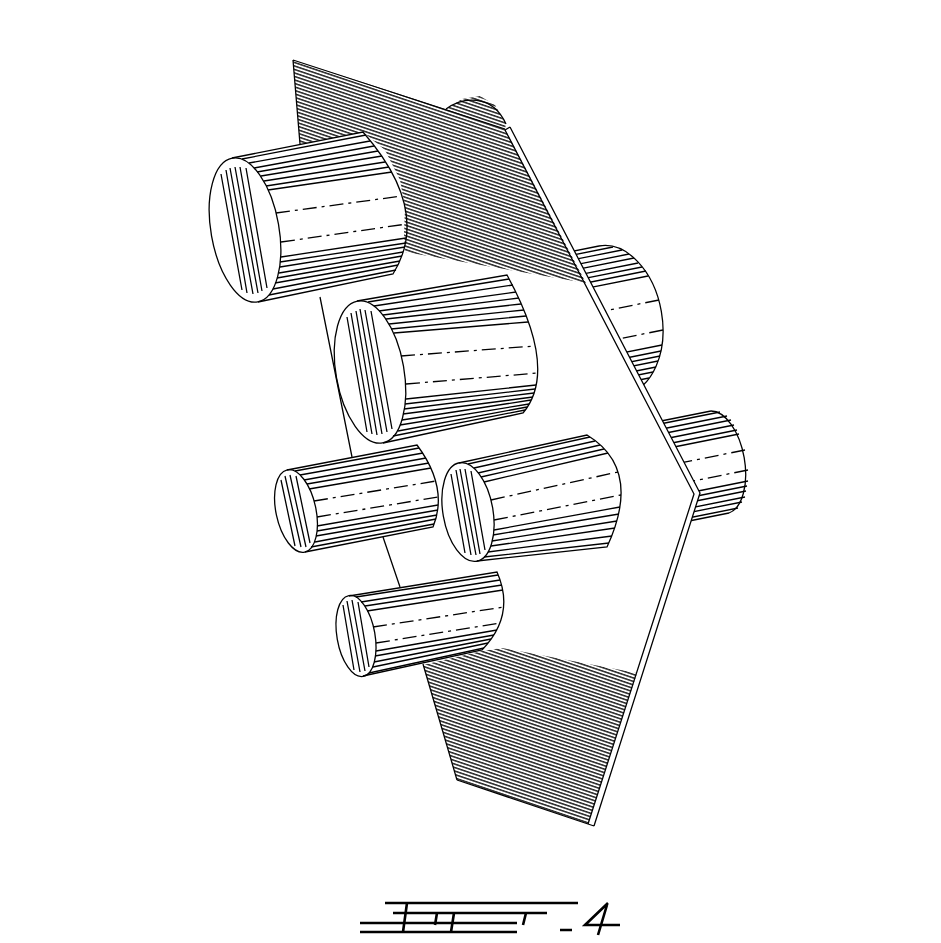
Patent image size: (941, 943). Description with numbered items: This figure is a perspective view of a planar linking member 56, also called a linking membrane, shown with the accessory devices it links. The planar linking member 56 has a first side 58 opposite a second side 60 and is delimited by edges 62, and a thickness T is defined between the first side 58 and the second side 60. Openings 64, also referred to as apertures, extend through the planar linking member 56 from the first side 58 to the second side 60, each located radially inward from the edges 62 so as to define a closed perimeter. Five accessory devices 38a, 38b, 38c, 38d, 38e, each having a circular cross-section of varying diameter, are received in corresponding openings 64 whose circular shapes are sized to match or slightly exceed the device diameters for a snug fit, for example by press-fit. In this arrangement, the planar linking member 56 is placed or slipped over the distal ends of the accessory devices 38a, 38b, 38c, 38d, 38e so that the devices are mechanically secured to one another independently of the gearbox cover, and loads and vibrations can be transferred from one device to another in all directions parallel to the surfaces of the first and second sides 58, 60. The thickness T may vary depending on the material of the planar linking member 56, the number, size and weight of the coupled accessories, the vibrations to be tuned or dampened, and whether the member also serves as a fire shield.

The planar linking member 56 is at (766, 146).
The first side 58 is at (520, 747).
The second side 60 is at (660, 738).
The edges 62 is at (443, 741).
The openings 64 is at (385, 133).
The thickness T is at (652, 395).
The first accessory device 38a is at (240, 222).
The second accessory device 38b is at (632, 298).
The accessory device 38c is at (337, 503).
The accessory device 38d is at (713, 463).
The accessory device 38e is at (397, 623).